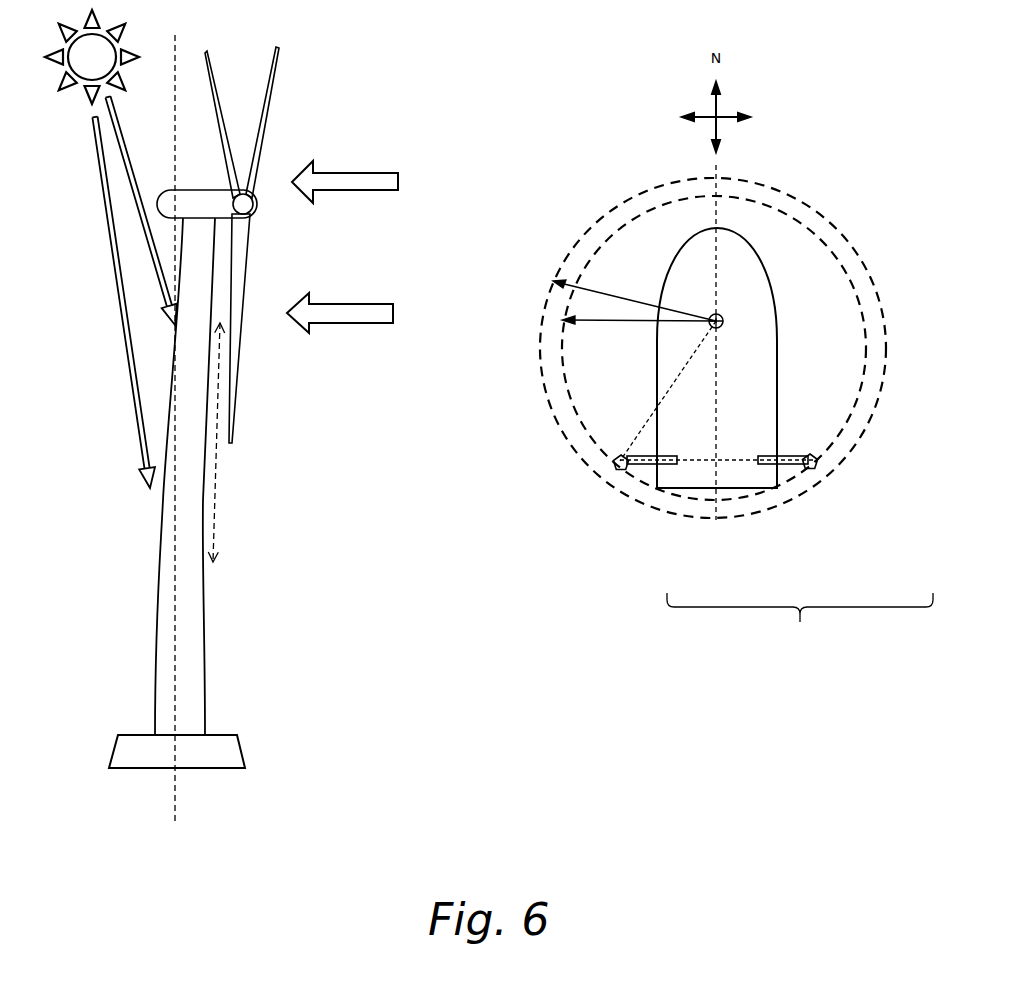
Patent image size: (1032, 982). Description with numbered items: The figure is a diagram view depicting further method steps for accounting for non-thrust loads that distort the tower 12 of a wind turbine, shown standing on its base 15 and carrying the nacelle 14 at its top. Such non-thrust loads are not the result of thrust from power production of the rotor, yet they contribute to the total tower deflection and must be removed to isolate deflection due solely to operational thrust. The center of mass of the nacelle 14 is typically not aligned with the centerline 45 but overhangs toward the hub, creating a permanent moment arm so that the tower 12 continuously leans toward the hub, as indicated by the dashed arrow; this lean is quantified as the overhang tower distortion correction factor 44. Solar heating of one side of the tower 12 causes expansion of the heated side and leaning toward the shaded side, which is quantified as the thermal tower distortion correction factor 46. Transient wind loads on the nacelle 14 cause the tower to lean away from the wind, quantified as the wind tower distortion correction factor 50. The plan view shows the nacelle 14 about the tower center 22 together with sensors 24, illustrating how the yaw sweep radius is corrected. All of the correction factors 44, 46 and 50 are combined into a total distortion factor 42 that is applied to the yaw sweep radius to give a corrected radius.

The tower 12 is at (155, 622).
The nacelle 14 is at (193, 188).
The foundation 15 is at (240, 750).
The yaw axis / tower center 22 is at (723, 325).
The sensors 24 is at (615, 466).
The total distortion factor 42 is at (853, 653).
The overhang tower distortion correction factor 44 is at (265, 497).
The centerline 45 is at (178, 650).
The thermal tower distortion correction factor 46 is at (55, 328).
The wind tower distortion correction factor 50 is at (392, 248).